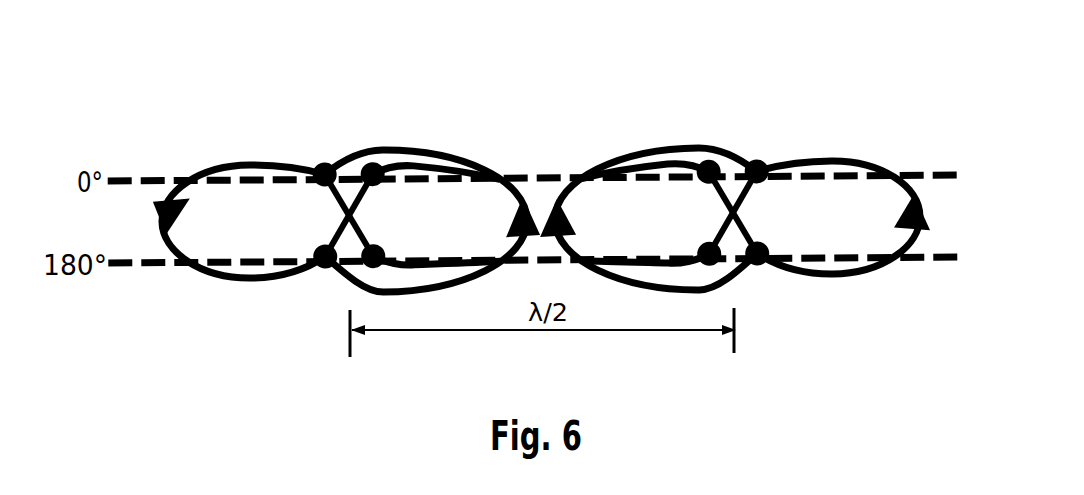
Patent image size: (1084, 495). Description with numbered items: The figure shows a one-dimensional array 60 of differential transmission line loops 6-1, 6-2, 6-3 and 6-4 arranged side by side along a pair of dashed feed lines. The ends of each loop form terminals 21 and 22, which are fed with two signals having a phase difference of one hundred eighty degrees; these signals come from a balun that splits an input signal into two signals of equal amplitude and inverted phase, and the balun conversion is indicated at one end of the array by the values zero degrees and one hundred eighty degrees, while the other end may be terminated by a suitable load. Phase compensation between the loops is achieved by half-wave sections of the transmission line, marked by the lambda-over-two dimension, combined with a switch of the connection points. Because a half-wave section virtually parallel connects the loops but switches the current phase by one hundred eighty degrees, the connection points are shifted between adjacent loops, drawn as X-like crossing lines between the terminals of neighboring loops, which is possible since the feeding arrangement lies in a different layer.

The one-dimensional array 60 is at (263, 38).
The differential TRL loop 6-1 is at (252, 164).
The differential TRL loop 6-2 is at (481, 160).
The differential TRL loop 6-3 is at (636, 162).
The differential TRL loop 6-4 is at (835, 159).
The terminal 21 is at (329, 165).
The terminal 22 is at (320, 270).